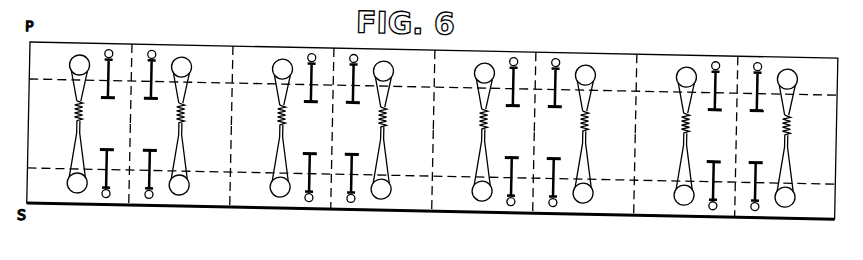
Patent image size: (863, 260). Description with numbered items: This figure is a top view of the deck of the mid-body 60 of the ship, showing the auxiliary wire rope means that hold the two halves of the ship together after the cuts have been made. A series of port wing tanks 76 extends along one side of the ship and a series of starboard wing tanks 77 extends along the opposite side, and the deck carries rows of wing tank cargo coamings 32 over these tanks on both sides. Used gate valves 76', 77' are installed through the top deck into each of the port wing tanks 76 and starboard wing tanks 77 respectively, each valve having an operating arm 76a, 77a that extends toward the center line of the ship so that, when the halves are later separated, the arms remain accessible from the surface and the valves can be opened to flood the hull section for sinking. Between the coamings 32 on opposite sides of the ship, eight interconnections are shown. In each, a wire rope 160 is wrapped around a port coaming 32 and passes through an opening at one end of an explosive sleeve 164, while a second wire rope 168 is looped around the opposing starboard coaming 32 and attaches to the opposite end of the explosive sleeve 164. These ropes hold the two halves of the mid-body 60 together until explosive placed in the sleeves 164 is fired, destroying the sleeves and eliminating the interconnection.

The mid-body 60 is at (729, 0).
The wing tank cargo coamings 32 is at (50, 12).
The wire rope 160 is at (48, 32).
The explosive sleeve 164 is at (45, 74).
The wire rope 168 is at (43, 108).
The port wing tanks 76 is at (386, 68).
The gate valves 76' is at (449, 57).
The operating arm 76a is at (309, 121).
The starboard wing tanks 77 is at (388, 190).
The gate valves 77' is at (433, 201).
The operating arm 77a is at (74, 106).